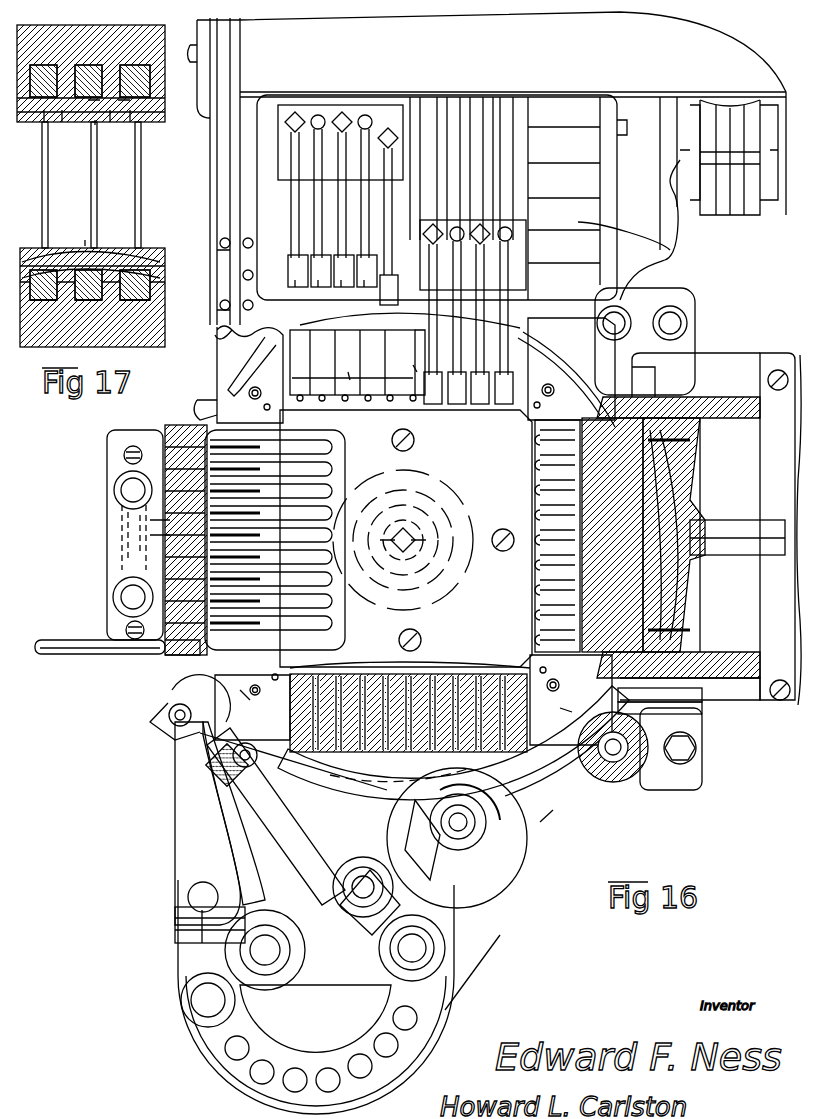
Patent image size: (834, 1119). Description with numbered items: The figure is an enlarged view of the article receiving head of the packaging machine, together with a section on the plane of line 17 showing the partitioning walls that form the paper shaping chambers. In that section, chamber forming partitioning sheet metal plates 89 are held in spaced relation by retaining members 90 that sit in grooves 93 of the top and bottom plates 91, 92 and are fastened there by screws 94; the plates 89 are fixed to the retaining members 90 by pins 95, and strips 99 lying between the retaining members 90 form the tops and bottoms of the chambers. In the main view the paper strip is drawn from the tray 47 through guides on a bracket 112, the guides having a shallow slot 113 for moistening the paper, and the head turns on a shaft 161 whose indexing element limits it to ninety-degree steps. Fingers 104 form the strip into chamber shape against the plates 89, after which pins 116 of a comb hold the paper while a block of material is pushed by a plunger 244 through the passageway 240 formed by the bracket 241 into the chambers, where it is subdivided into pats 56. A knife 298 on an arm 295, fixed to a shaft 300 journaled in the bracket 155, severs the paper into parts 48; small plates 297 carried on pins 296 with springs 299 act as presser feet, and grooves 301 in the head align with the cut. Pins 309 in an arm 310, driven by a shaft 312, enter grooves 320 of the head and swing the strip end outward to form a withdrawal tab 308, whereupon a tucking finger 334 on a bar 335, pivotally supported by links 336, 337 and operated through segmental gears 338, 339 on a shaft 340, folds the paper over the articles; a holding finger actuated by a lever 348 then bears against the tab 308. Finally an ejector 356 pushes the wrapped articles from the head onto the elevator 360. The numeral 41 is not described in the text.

In FIG. 16, the section line 17— 17 is at (350, 380).
In FIG. 16, the connecting wire 41 is at (636, 230).
In FIG. 16, the tray 47 is at (742, 55).
In FIG. 16, the parts 48 is at (180, 425).
In FIG. 16, the pats 56 is at (170, 533).
In FIG. 17, the partitioning sheet metal plates 89 is at (90, 198).
In FIG. 16, the partitioning sheet metal plates 89 is at (360, 398).
In FIG. 17, the retaining members 90 is at (100, 112).
In FIG. 17, the bottom plate 91 is at (150, 322).
In FIG. 17, the top plate 92 is at (130, 35).
In FIG. 17, the grooves 93 is at (160, 278).
In FIG. 17, the screws 94 is at (60, 110).
In FIG. 17, the pins 95 is at (160, 262).
In FIG. 17, the strips 99 is at (97, 125).
In FIG. 16, the fingers 104 is at (345, 245).
In FIG. 16, the bracket 112 is at (222, 265).
In FIG. 16, the slot 113 is at (235, 332).
In FIG. 16, the pins 116 is at (415, 395).
In FIG. 16, the bracket 155 is at (470, 975).
In FIG. 16, the shaft 161 is at (425, 590).
In FIG. 16, the passageway 240 is at (735, 440).
In FIG. 16, the bracket 241 is at (712, 368).
In FIG. 16, the plunger 244 is at (690, 500).
In FIG. 16, the arm 295 is at (555, 815).
In FIG. 16, the pins 296 is at (648, 795).
In FIG. 16, the small plates 297 is at (712, 694).
In FIG. 16, the knife 298 is at (712, 708).
In FIG. 16, the springs 299 is at (600, 780).
In FIG. 16, the shaft 300 is at (520, 875).
In FIG. 16, the grooves 301 is at (402, 701).
In FIG. 16, the withdrawal tab 308 is at (165, 660).
In FIG. 16, the pins 309 is at (168, 718).
In FIG. 16, the arm 310 is at (335, 830).
In FIG. 16, the shaft 312 is at (355, 915).
In FIG. 16, the grooves 320 is at (225, 672).
In FIG. 16, the tucking finger 334 is at (200, 858).
In FIG. 16, the bar 335 is at (190, 815).
In FIG. 16, the link 336 is at (228, 1065).
In FIG. 16, the link 337 is at (258, 750).
In FIG. 16, the segmental gear 338 is at (460, 758).
In FIG. 16, the segmental gear 339 is at (310, 788).
In FIG. 16, the shaft 340 is at (268, 955).
In FIG. 16, the lever 348 is at (65, 655).
In FIG. 16, the ejector 356 is at (330, 625).
In FIG. 16, the elevator 360 is at (120, 560).